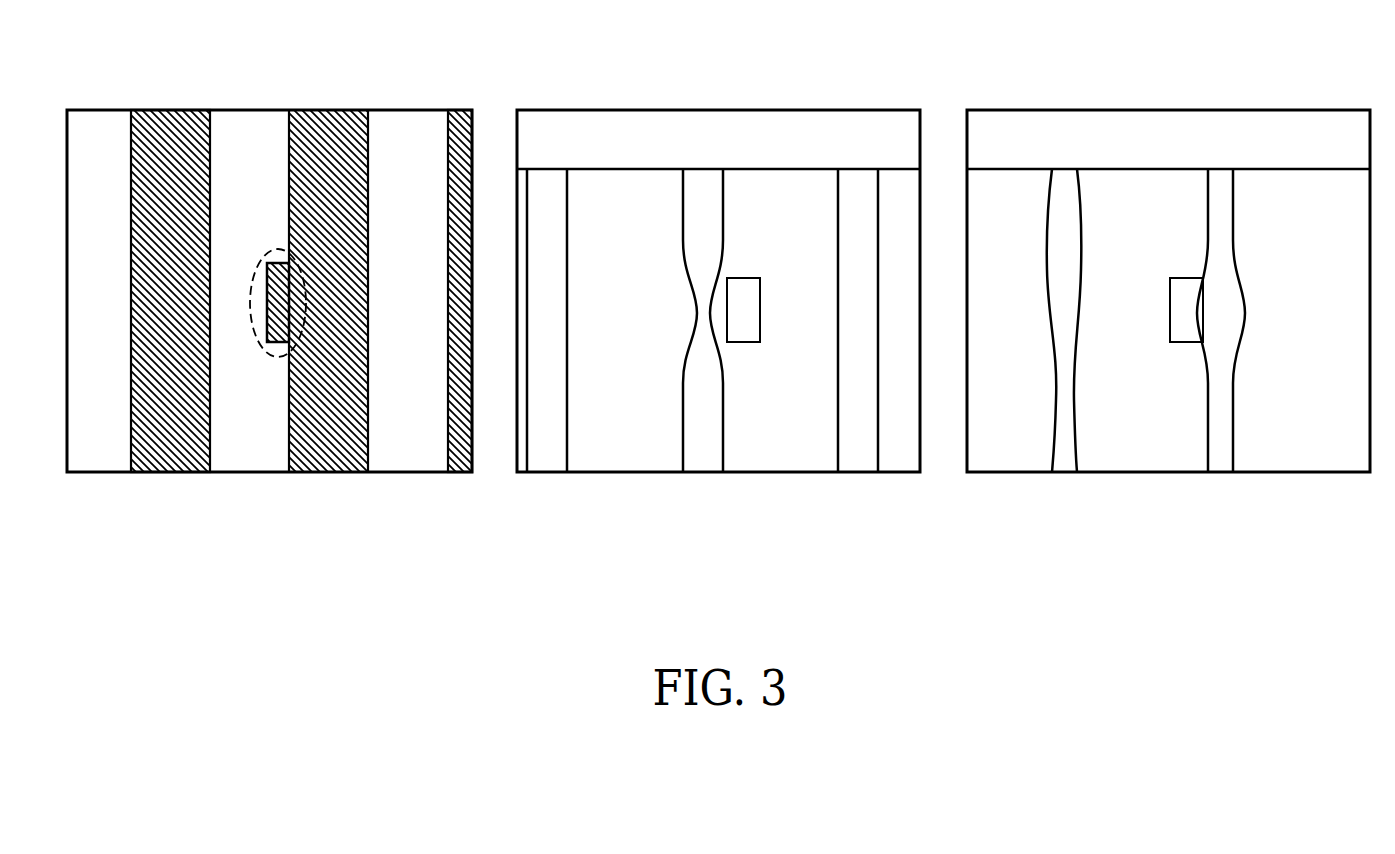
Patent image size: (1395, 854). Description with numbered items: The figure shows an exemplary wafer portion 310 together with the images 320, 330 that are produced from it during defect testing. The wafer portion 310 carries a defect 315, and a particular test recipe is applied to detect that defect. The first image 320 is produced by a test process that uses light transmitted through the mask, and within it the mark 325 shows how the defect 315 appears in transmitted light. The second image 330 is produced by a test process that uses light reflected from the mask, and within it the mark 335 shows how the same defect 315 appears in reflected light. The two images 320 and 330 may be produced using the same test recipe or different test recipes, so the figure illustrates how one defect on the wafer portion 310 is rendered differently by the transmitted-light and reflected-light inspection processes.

The wafer portion 310 is at (247, 108).
The defect 315 is at (272, 354).
The image 320 is at (717, 108).
The mark 325 is at (727, 355).
The image 330 is at (1167, 108).
The mark 335 is at (1243, 355).